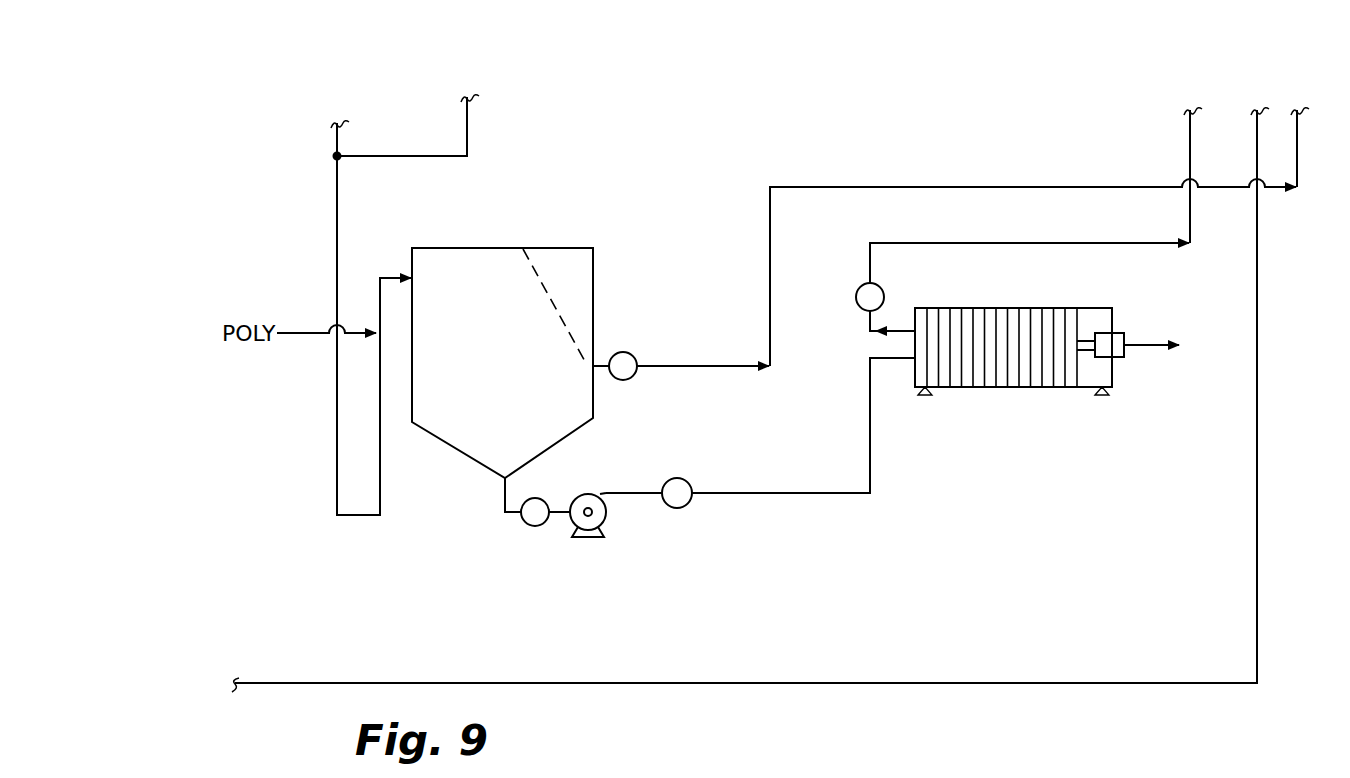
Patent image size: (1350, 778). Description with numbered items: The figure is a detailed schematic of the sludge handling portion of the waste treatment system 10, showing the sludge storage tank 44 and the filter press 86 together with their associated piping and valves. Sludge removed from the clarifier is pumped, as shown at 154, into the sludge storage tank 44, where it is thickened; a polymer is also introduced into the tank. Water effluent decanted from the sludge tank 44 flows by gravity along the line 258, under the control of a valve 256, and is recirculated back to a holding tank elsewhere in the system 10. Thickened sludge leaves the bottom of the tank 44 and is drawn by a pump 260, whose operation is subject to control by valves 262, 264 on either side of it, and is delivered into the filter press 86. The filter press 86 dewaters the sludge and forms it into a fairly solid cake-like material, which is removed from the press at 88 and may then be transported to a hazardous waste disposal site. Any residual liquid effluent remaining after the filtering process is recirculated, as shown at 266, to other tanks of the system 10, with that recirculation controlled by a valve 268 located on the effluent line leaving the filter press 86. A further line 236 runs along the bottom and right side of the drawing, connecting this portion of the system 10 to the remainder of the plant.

The system 10 is at (924, 562).
The sludge storage tank 44 is at (593, 282).
The filter press 86 is at (1018, 305).
The dewatered sludge removal 88 is at (1140, 340).
The sludge line 154 is at (338, 218).
The return line 236 is at (608, 681).
The valve 256 is at (640, 352).
The water effluent recirculation line 258 is at (771, 265).
The pump 260 is at (590, 494).
The valve 262 is at (537, 528).
The valve 264 is at (690, 482).
The residual liquid effluent recirculation line 266 is at (1028, 227).
The valve 268 is at (884, 292).